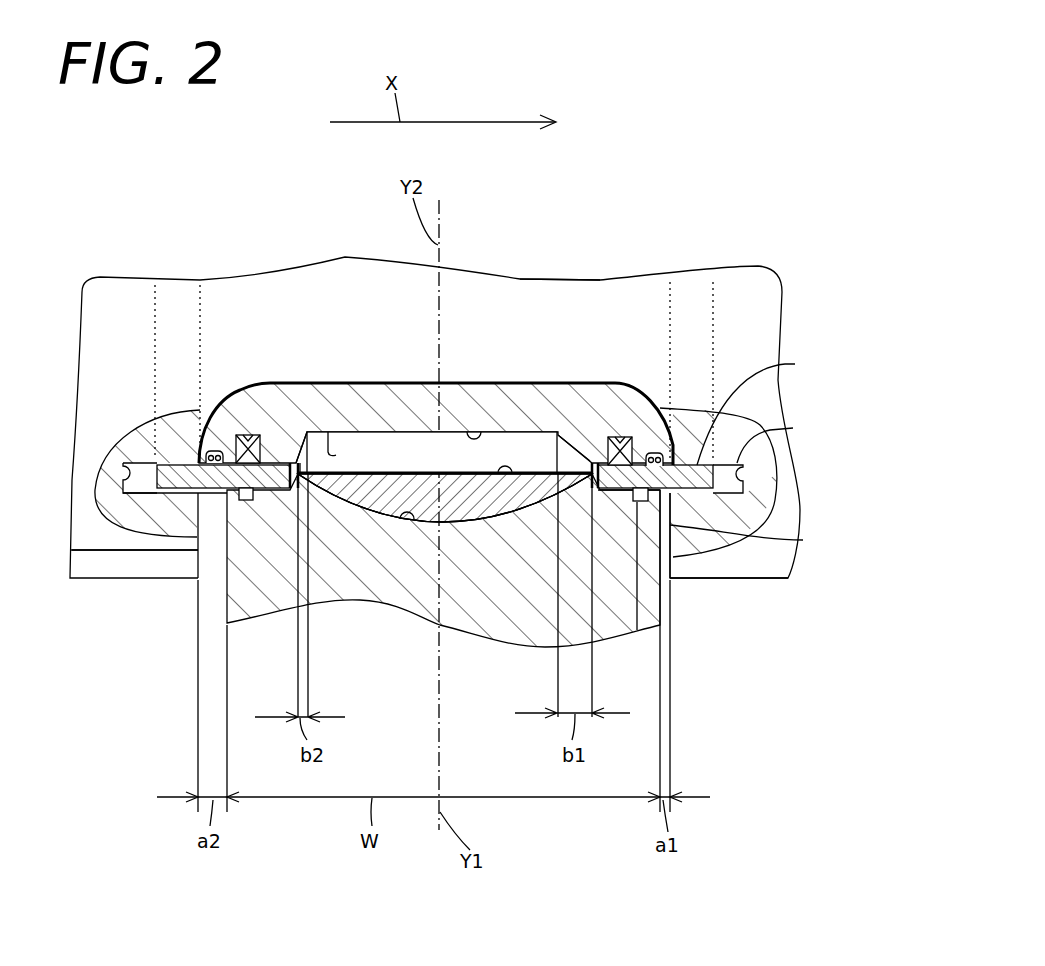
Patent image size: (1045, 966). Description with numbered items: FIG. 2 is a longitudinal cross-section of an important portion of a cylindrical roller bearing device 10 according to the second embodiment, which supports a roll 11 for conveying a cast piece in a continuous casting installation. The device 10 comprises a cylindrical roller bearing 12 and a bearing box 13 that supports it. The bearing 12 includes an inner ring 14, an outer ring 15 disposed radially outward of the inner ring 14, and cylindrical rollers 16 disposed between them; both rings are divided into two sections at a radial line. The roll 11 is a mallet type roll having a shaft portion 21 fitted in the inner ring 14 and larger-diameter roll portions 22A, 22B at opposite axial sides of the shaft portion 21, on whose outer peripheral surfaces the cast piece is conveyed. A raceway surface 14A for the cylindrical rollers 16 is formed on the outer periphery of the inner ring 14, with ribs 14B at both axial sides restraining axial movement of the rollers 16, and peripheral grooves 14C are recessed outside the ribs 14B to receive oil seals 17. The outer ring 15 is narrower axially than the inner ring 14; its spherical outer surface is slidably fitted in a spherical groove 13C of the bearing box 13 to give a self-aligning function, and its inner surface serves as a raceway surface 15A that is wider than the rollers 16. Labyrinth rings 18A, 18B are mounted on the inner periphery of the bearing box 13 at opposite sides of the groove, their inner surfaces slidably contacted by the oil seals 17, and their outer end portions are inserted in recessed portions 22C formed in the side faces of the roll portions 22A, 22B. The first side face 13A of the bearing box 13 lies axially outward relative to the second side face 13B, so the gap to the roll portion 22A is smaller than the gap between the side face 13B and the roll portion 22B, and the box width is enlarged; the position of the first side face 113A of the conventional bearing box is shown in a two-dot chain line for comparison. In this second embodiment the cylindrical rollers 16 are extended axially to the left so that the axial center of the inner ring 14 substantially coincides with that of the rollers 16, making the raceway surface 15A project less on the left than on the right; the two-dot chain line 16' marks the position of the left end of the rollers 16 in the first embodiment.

The cylindrical roller bearing device 10 is at (714, 258).
The roll 11 is at (93, 580).
The cylindrical roller bearing 12 is at (528, 378).
The bearing box 13 is at (493, 640).
The first side face 13A is at (785, 540).
The second side face 13B is at (200, 551).
The spherical groove 13C is at (412, 522).
The inner ring 14 is at (293, 410).
The raceway surface 14A is at (476, 430).
The ribs 14B is at (290, 413).
The peripheral grooves 14C is at (245, 435).
The outer ring 15 is at (468, 497).
The raceway surface 15A is at (497, 648).
The cylindrical rollers 16 is at (443, 349).
The position of left end portion of cylindrical rollers 16' is at (345, 343).
The oil seals 17 is at (260, 503).
The labyrinth ring 18A is at (775, 365).
The labyrinth ring 18B is at (150, 490).
The shaft portion 21 is at (573, 332).
The roll portion 22A is at (743, 580).
The roll portion 22B is at (140, 580).
The recessed portions 22C is at (780, 430).
The first side face of conventional bearing box 113A is at (637, 590).